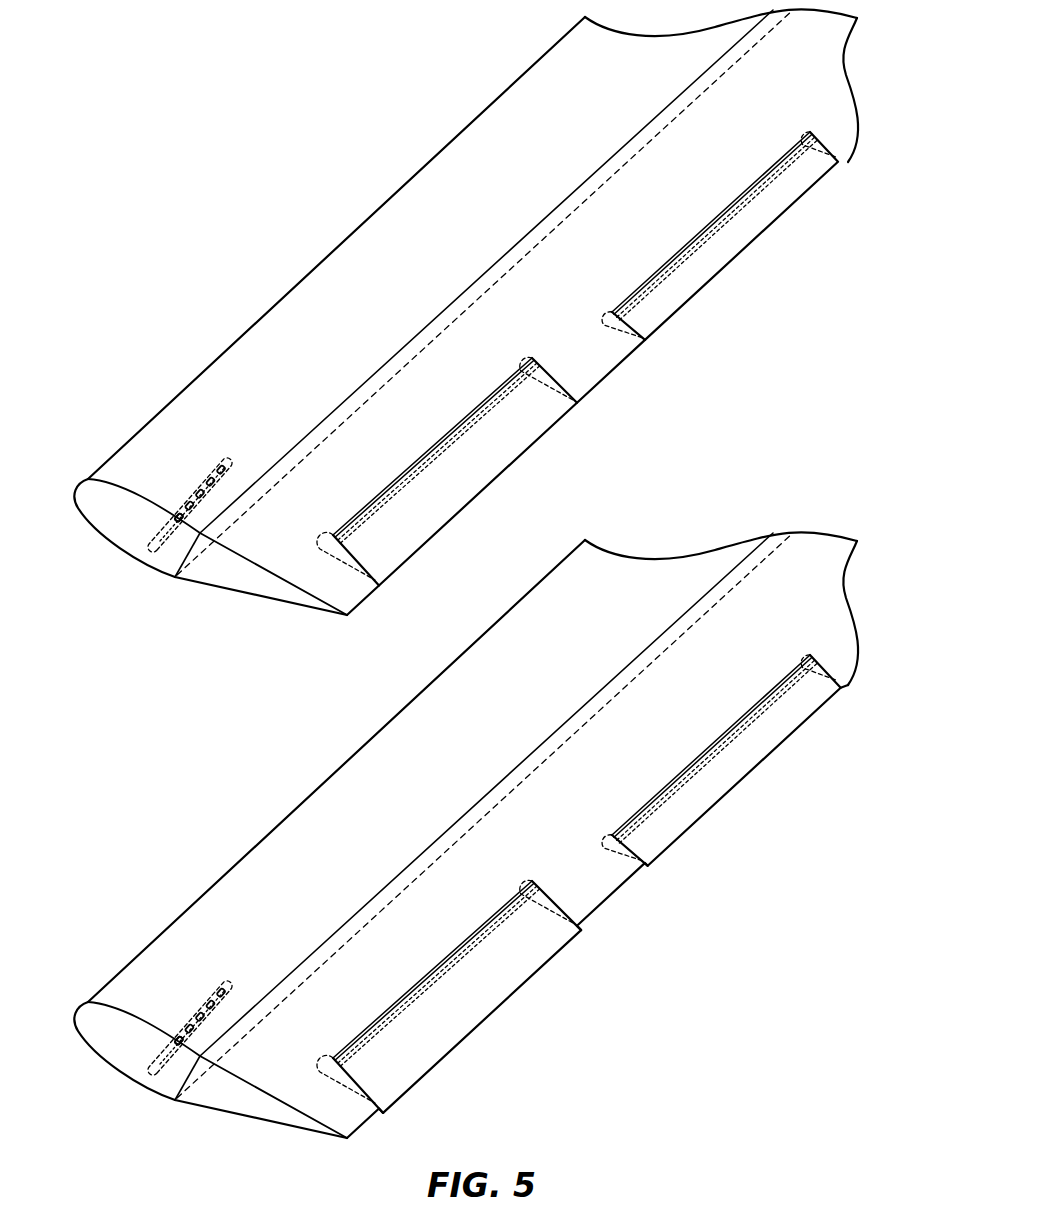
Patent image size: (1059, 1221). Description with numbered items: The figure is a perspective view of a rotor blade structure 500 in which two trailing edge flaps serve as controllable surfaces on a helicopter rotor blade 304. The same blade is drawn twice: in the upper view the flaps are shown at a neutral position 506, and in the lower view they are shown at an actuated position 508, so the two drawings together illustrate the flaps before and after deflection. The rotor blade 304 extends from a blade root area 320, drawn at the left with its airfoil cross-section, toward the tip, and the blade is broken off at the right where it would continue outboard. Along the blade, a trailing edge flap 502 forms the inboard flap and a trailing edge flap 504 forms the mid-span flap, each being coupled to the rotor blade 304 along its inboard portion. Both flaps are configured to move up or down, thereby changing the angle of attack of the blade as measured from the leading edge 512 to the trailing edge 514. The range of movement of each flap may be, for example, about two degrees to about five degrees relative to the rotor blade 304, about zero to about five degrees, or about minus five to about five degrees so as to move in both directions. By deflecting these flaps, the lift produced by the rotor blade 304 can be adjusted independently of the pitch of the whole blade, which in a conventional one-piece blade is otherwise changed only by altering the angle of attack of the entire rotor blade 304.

The rotor blade structure 500 is at (244, 120).
The rotor blade 304 is at (362, 240).
The blade root area 320 is at (126, 516).
The trailing edge flap 502 is at (733, 245).
The trailing edge flap 504 is at (467, 487).
The neutral position 506 is at (200, 255).
The actuated position 508 is at (200, 788).
The leading edge 512 is at (462, 104).
The trailing edge 514 is at (852, 168).